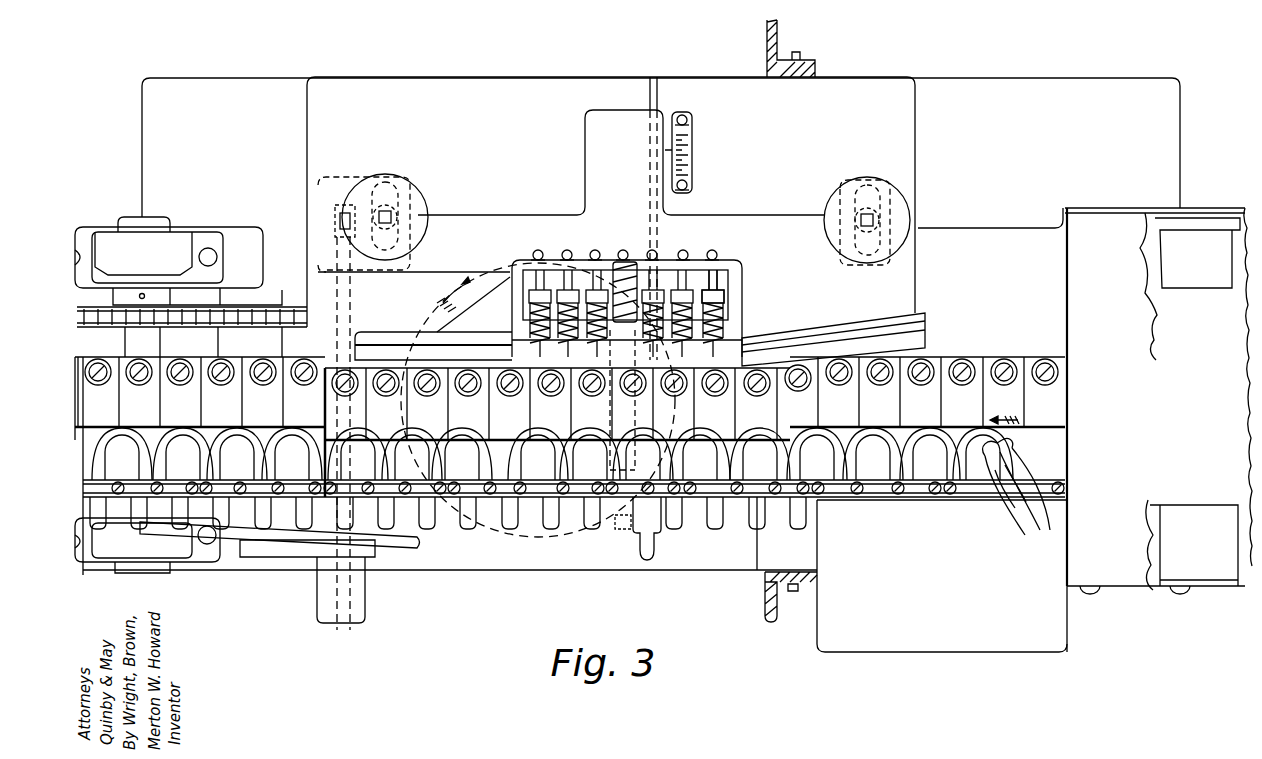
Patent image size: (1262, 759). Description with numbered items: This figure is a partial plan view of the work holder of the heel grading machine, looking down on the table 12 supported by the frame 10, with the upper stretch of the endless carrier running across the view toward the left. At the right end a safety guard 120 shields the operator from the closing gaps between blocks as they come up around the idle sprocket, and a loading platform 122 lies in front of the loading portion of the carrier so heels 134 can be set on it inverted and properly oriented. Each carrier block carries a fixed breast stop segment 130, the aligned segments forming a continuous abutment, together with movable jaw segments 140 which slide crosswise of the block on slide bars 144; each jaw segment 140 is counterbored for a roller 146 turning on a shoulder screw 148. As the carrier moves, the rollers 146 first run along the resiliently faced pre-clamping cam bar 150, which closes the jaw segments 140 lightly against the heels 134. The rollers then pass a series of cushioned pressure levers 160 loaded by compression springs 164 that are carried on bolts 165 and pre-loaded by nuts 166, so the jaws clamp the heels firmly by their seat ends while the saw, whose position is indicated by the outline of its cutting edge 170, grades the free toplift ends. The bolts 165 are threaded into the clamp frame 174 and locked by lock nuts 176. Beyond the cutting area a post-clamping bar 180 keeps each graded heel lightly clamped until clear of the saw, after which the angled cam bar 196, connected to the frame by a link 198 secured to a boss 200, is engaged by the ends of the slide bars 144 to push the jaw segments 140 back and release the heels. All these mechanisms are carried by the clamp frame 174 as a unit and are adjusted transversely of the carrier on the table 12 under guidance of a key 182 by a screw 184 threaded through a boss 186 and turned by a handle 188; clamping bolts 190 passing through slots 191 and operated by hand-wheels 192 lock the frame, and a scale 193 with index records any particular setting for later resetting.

The frame 10 is at (260, 92).
The table 12 is at (542, 92).
The safety guard 120 is at (1124, 565).
The loading platform 122 is at (830, 614).
The breast stop segment 130 is at (958, 490).
The heels 134 is at (980, 500).
The jaw segments 140 is at (985, 393).
The slide bar 144 is at (478, 535).
The roller 146 is at (963, 357).
The shoulder screw 148 is at (980, 410).
The pre-clamping cam bar 150 is at (920, 332).
The pressure levers 160 is at (718, 355).
The compression springs 164 is at (728, 335).
The bolts 165 is at (723, 283).
The nuts 166 is at (724, 297).
The cutting edge 170 is at (530, 533).
The clamp frame 174 is at (726, 262).
The lock nuts 176 is at (712, 250).
The post-clamping bar 180 is at (397, 352).
The key 182 is at (658, 92).
The screw 184 is at (625, 258).
The boss 186 is at (623, 258).
The handle 188 is at (668, 556).
The clamping bolts 190 is at (378, 210).
The slots 191 is at (382, 188).
The hand-wheels 192 is at (405, 197).
The scale 193 is at (711, 143).
The cam bar 196 is at (400, 548).
The link 198 is at (347, 300).
The boss 200 is at (337, 222).